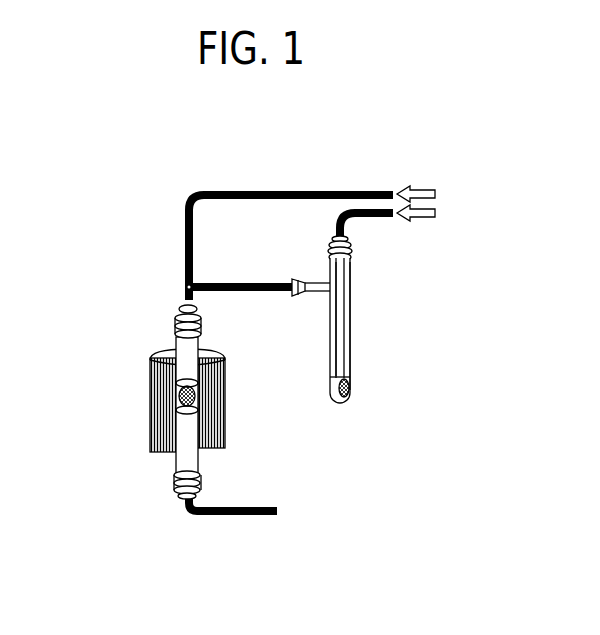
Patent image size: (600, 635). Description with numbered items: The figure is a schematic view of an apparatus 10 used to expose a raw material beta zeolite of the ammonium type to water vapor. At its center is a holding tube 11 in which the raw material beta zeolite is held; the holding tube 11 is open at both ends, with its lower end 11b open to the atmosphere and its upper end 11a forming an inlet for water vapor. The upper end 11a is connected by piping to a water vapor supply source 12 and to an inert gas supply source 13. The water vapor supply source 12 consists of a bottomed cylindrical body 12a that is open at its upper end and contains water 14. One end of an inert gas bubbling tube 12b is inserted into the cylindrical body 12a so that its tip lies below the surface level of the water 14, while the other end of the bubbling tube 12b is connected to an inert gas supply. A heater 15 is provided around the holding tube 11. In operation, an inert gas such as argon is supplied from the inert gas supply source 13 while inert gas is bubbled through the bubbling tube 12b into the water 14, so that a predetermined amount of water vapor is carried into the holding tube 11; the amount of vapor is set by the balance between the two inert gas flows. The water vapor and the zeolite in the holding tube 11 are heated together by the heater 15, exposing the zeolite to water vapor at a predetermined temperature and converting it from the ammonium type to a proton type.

The apparatus 10 is at (124, 204).
The holding tube 11 is at (200, 458).
The upper end 11a is at (172, 317).
The lower end 11b is at (173, 482).
The water vapor supply source 12 is at (358, 280).
The bottomed cylindrical body 12a is at (355, 327).
The inert gas bubbling tube 12b is at (338, 350).
The inert gas supply source 13 is at (337, 190).
The water 14 is at (350, 398).
The heater 15 is at (150, 402).